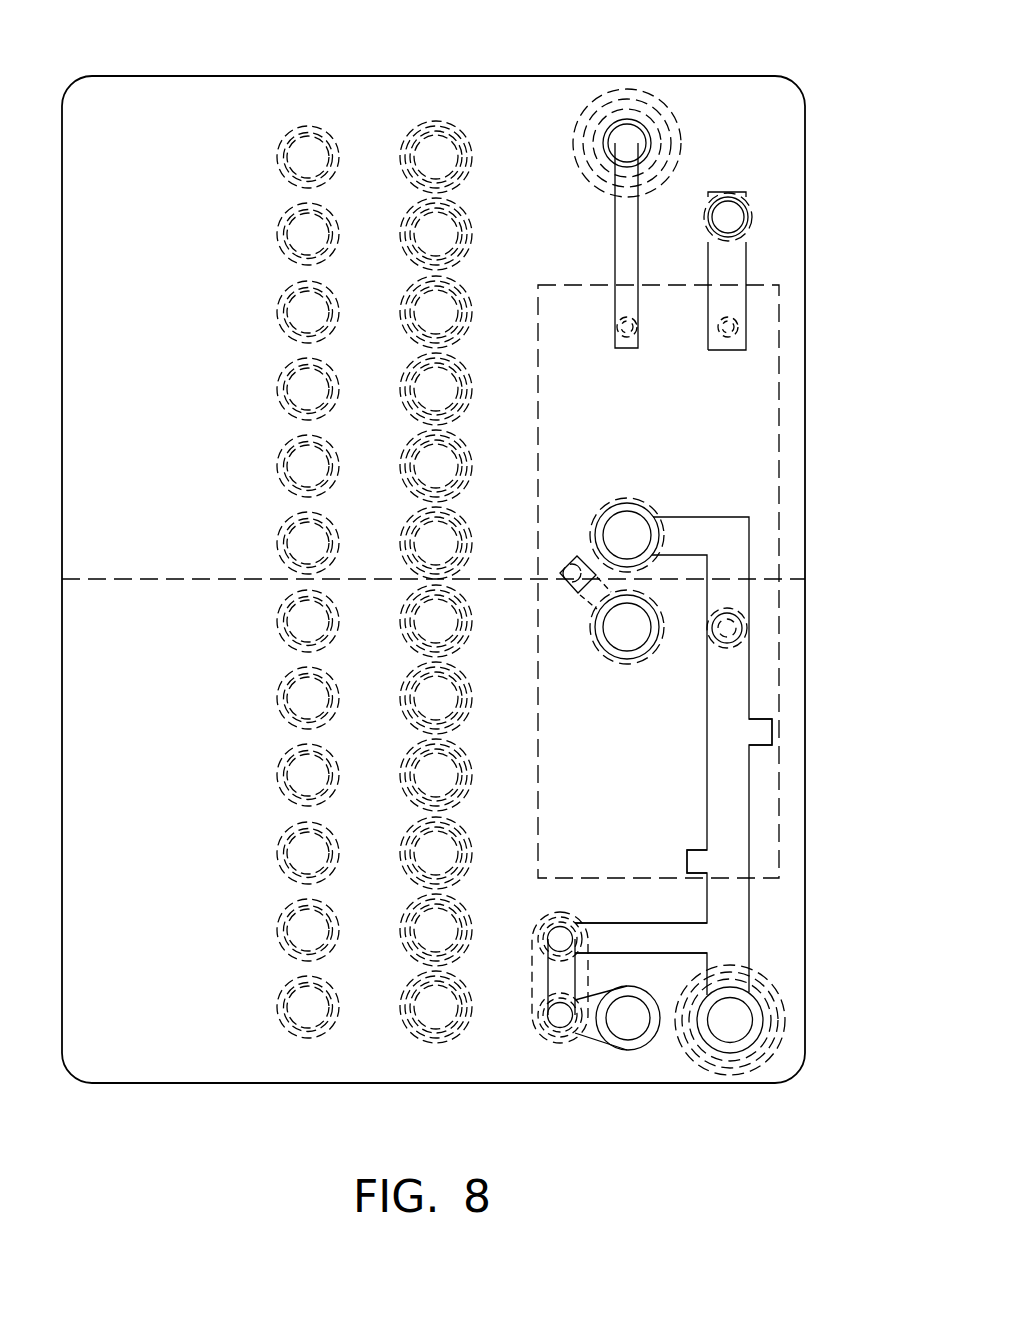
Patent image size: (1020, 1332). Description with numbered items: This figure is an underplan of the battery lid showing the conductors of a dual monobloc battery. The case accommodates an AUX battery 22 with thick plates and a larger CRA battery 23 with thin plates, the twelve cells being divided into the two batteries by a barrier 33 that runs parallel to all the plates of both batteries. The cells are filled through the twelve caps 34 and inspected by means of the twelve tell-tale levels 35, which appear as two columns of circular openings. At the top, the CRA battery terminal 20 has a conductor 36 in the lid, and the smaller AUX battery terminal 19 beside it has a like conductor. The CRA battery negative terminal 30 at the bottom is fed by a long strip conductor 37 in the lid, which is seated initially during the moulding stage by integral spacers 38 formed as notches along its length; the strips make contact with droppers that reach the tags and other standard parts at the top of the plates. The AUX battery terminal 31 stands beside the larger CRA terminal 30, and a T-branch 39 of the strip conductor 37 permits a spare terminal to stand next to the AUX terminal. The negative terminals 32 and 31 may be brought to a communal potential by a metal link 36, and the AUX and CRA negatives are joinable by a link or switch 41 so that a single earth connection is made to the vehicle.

The AUX battery terminal 19 is at (727, 217).
The CRA battery terminal 20 is at (605, 100).
The AUX battery 22 is at (132, 280).
The CRA battery 23 is at (171, 720).
The CRA battery negative terminal 30 is at (783, 1022).
The AUX battery terminal 31 is at (632, 1022).
The negative terminal 32 is at (560, 939).
The barrier 33 is at (228, 579).
The caps 34 is at (415, 1025).
The tell-tale levels 35 is at (288, 1008).
The conductor 36 is at (614, 250).
The strip conductor 37 is at (746, 263).
The integral spacers 38 is at (760, 733).
The T-branch 39 is at (623, 940).
The link or switch 41 is at (550, 988).